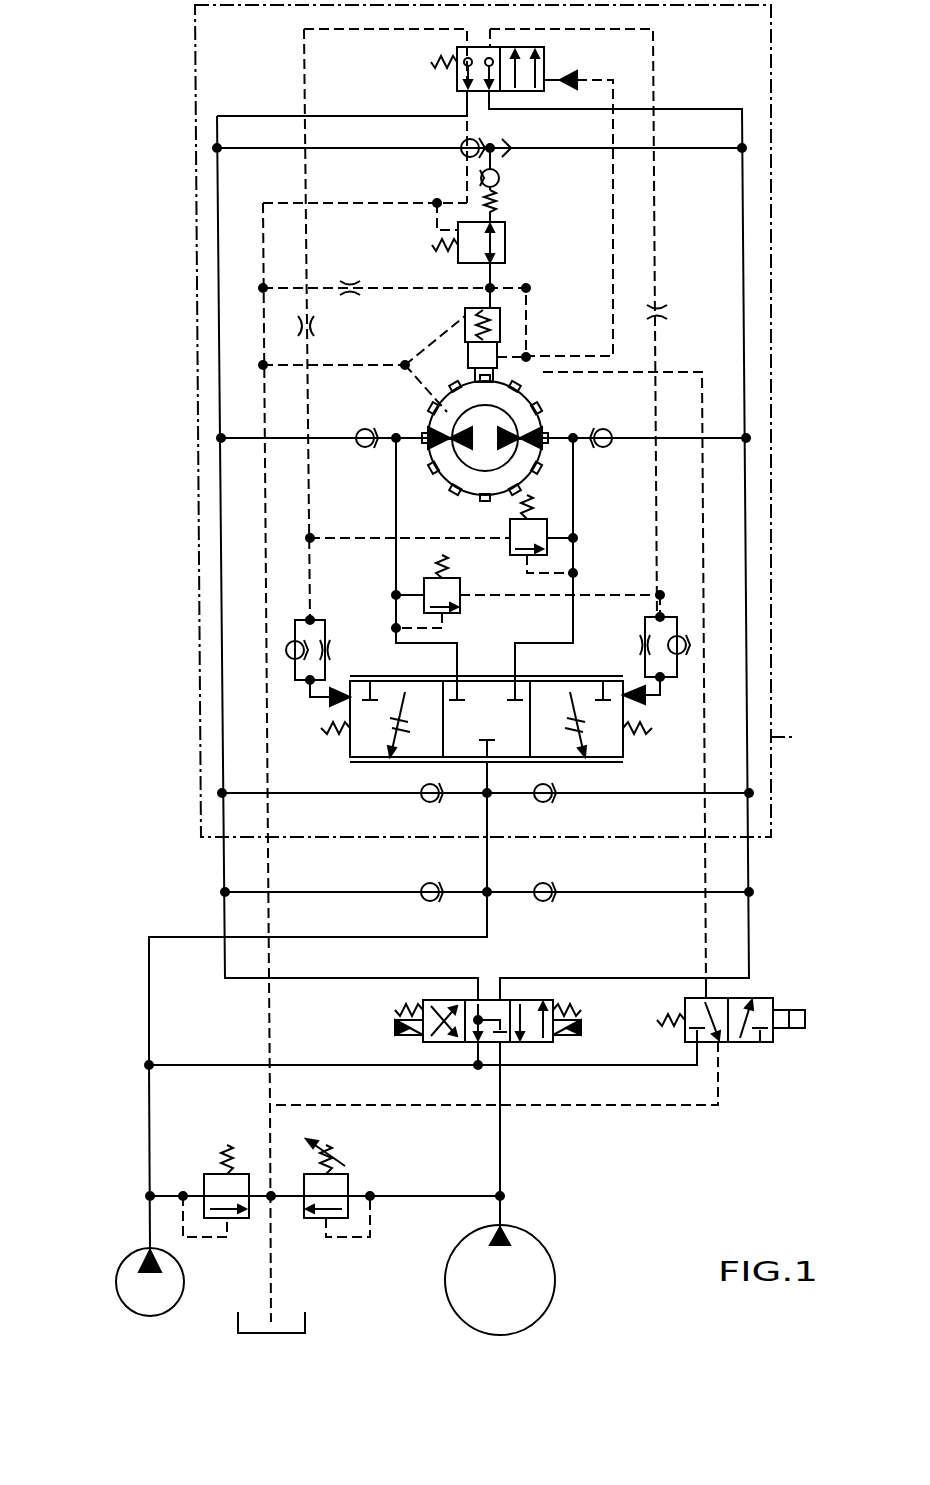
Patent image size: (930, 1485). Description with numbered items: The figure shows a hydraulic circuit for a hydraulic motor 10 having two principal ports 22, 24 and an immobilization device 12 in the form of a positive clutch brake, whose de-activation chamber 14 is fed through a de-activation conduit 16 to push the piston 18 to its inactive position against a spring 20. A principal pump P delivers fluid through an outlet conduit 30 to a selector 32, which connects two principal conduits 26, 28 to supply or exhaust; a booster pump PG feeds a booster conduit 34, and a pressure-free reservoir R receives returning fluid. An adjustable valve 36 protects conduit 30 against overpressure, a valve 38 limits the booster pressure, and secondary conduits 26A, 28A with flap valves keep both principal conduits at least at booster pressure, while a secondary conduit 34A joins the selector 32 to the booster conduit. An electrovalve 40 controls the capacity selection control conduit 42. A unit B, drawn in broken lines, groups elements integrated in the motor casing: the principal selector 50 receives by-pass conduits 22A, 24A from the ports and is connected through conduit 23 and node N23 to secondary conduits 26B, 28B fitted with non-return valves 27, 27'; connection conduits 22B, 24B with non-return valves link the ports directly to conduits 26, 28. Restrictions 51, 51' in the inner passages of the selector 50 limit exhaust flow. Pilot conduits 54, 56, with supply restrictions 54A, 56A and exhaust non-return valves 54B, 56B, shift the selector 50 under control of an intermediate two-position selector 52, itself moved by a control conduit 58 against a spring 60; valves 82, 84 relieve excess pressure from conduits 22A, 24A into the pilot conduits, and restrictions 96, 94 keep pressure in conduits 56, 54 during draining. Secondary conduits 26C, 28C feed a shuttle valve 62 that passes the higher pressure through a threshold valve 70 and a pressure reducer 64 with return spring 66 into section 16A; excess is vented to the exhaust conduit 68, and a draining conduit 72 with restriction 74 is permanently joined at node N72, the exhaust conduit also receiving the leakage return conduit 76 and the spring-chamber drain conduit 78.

The hydraulic motor 10 is at (538, 408).
The immobilization device 12 is at (560, 645).
The de-activation chamber 14 is at (469, 352).
The de-activation conduit 16 is at (498, 215).
The section of the de-activation conduit 16A is at (526, 350).
The piston 18 is at (497, 372).
The spring 20 is at (466, 316).
The principal port 22 is at (556, 442).
The by-pass conduit 22A is at (575, 532).
The connection conduit 22B is at (624, 442).
The conduit 23 is at (489, 778).
The principal port 24 is at (416, 442).
The by-pass conduit 24A is at (395, 497).
The connection conduit 24B is at (328, 436).
The principal conduit 26 is at (742, 108).
The secondary conduit 26A is at (622, 895).
The secondary conduit 26B is at (607, 795).
The secondary conduit 26C is at (700, 150).
The non-return valve 27 is at (521, 809).
The non-return valve 27' is at (413, 809).
The principal conduit 28 is at (252, 115).
The secondary conduit 28A is at (298, 891).
The secondary conduit 28B is at (298, 792).
The secondary conduit 28C is at (337, 150).
The outlet conduit 30 is at (500, 1140).
The selector 32 is at (443, 1046).
The booster conduit 34 is at (149, 1147).
The secondary conduit 34A is at (326, 1064).
The adjustable valve 36 is at (352, 1177).
The valve 38 is at (203, 1164).
The electrovalve 40 is at (752, 1049).
The capacity selection control conduit 42 is at (704, 568).
The principal selector 50 is at (502, 736).
The restriction 51 is at (496, 697).
The restriction 51' is at (366, 770).
The intermediate two-position selector 52 is at (557, 58).
The pilot conduit 54 is at (658, 246).
The restriction 54A is at (635, 650).
The non-return valve 54B is at (690, 650).
The pilot conduit 56 is at (304, 177).
The restriction 56A is at (338, 652).
The non-return valve 56B is at (288, 650).
The control conduit 58 is at (616, 165).
The spring 60 is at (430, 74).
The shuttle valve 62 is at (516, 135).
The pressure reducer 64 is at (513, 233).
The return spring 66 is at (431, 246).
The exhaust conduit 68 is at (262, 226).
The threshold valve 70 is at (502, 174).
The draining conduit 72 is at (375, 292).
The restriction 74 is at (346, 277).
The conduit for return of leakage 76 is at (432, 388).
The conduit for draining the spring chamber 78 is at (428, 345).
The valve 82 is at (510, 548).
The valve 84 is at (458, 616).
The restriction 94 is at (664, 309).
The restriction 96 is at (297, 326).
The node N23 is at (488, 800).
The node N72 is at (500, 282).
The unit B is at (507, 421).
The principal pump P is at (555, 1280).
The booster pump PG is at (118, 1305).
The reservoir R is at (305, 1318).